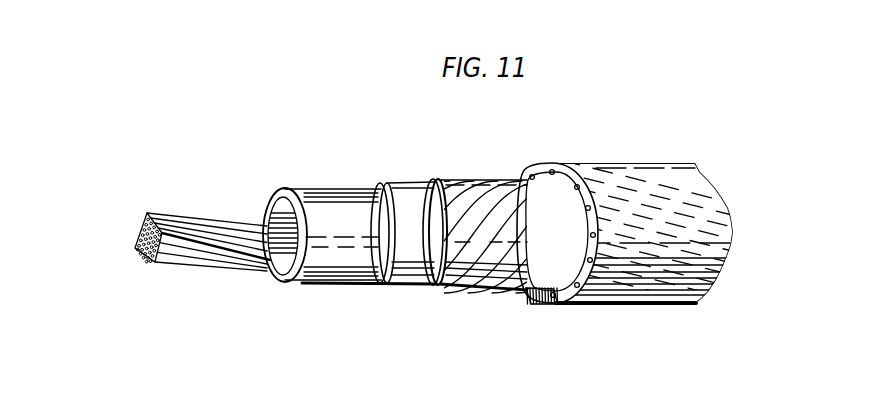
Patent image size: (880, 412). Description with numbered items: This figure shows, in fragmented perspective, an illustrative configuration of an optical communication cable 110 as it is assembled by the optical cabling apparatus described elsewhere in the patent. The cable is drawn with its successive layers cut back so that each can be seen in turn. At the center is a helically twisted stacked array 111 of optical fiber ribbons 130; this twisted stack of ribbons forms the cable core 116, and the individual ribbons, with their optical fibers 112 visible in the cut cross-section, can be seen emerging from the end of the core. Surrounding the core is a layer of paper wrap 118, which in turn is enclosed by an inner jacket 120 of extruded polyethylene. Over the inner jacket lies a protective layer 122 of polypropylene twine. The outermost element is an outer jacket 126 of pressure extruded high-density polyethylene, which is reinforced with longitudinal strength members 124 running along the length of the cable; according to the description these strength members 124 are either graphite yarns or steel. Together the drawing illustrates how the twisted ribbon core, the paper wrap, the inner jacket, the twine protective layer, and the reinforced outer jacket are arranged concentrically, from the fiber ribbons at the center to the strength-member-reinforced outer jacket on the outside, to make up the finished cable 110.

The optical communication cable 110 is at (612, 288).
The helically twisted stacked array 111 is at (134, 249).
The conductors 112 is at (141, 226).
The cable core 116 is at (236, 226).
The layer of paper wrap 118 is at (272, 270).
The inner jacket 120 is at (357, 188).
The protective layer 122 is at (400, 184).
The longitudinal strength members 124 is at (549, 171).
The outer jacket 126 is at (537, 300).
The optical fiber ribbons 130 is at (146, 212).